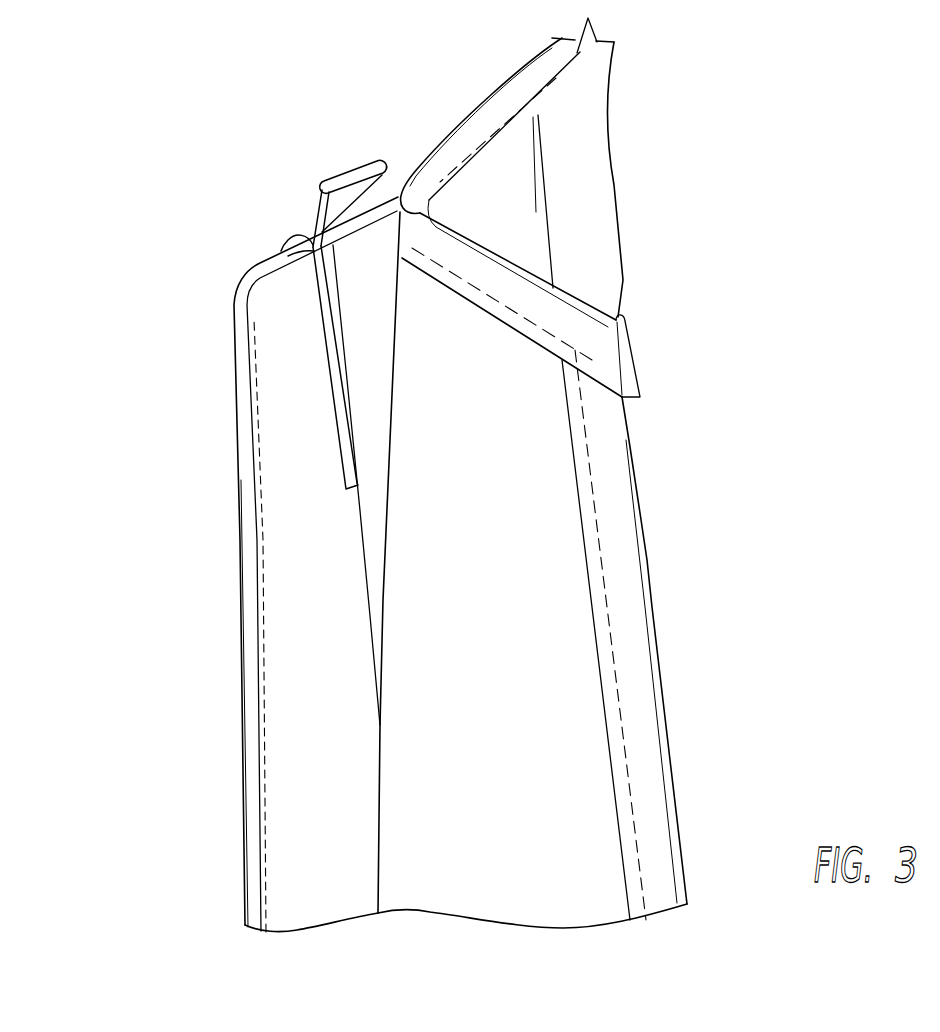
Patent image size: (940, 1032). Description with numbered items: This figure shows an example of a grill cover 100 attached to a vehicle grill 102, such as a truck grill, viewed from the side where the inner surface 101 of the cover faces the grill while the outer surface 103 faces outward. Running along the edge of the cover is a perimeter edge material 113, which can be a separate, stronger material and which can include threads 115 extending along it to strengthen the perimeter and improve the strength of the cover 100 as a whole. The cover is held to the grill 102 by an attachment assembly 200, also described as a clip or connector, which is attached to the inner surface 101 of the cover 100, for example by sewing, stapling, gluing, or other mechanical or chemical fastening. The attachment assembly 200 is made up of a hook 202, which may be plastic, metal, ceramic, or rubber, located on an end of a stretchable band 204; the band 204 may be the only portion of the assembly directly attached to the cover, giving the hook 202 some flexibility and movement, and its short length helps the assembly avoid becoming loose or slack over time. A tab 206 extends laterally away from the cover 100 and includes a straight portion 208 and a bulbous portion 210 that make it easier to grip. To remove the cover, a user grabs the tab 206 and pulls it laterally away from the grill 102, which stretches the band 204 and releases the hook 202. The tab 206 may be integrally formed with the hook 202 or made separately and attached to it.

The grill cover 100 is at (580, 257).
The inner surface 101 is at (422, 622).
The vehicle grill 102 is at (281, 488).
The outer surface 103 is at (596, 166).
The perimeter edge material 113 is at (485, 112).
The threads 115 is at (523, 326).
The attachment assembly 200 is at (237, 264).
The hook 202 is at (275, 231).
The stretchable band 204 is at (266, 329).
The tab 206 is at (304, 167).
The straight portion 208 is at (318, 222).
The bulbous portion 210 is at (368, 162).